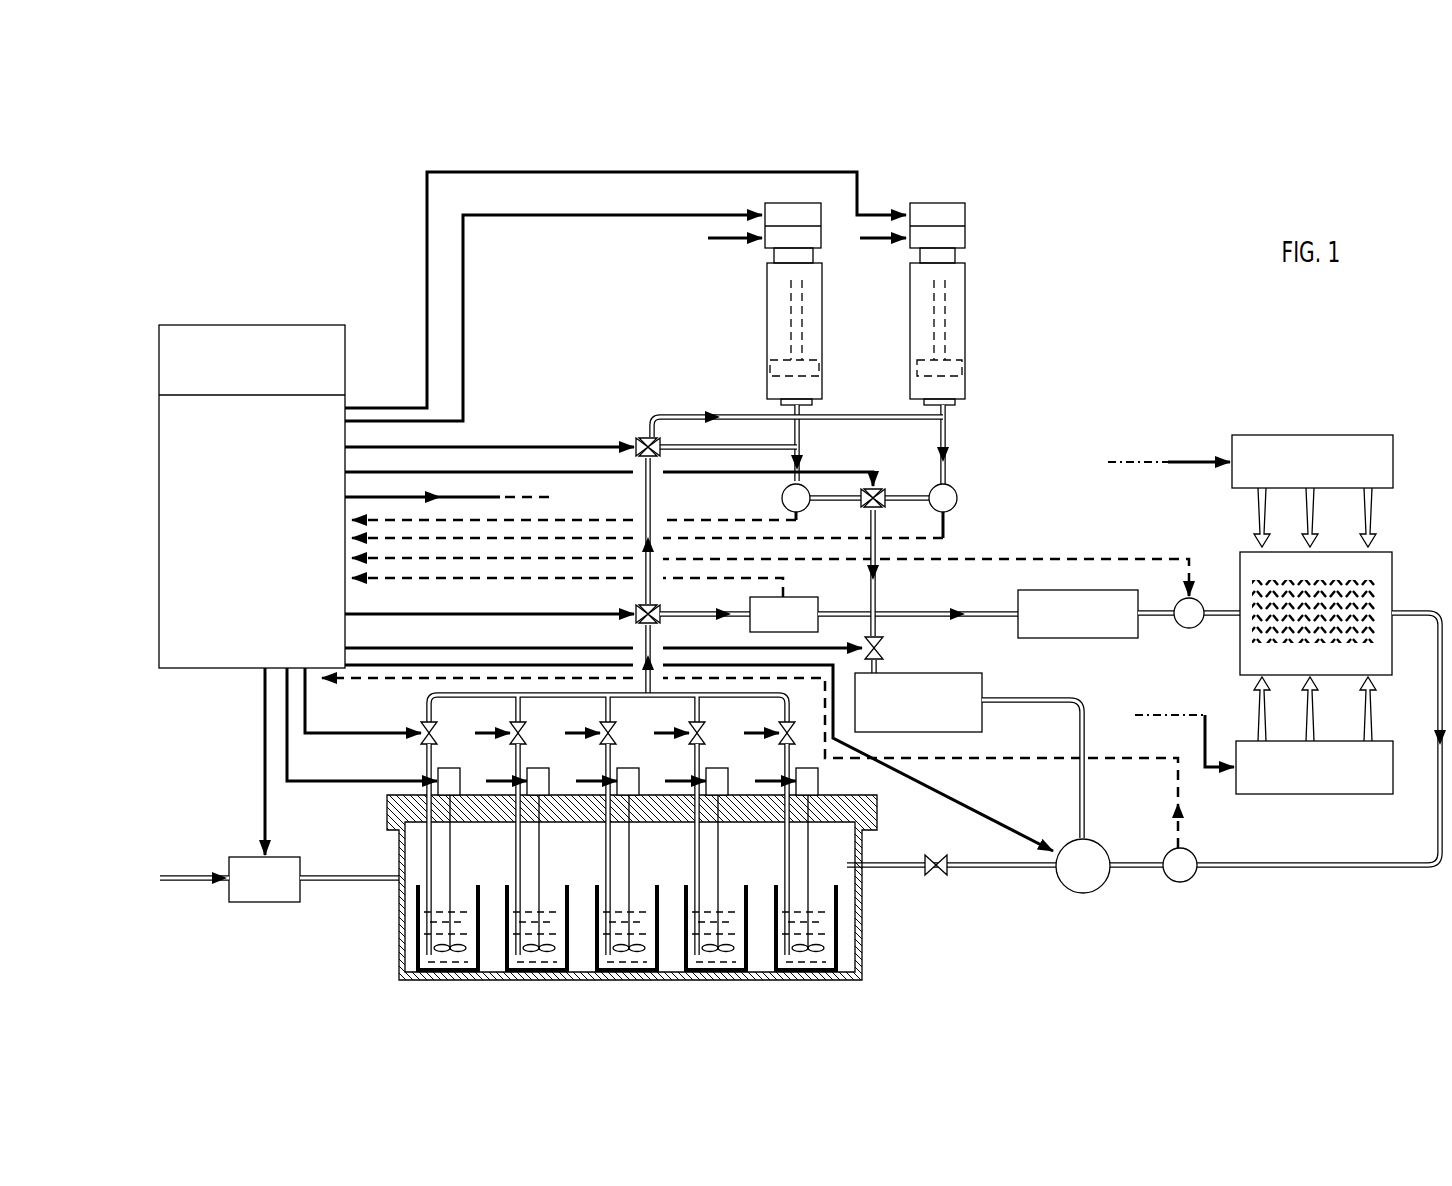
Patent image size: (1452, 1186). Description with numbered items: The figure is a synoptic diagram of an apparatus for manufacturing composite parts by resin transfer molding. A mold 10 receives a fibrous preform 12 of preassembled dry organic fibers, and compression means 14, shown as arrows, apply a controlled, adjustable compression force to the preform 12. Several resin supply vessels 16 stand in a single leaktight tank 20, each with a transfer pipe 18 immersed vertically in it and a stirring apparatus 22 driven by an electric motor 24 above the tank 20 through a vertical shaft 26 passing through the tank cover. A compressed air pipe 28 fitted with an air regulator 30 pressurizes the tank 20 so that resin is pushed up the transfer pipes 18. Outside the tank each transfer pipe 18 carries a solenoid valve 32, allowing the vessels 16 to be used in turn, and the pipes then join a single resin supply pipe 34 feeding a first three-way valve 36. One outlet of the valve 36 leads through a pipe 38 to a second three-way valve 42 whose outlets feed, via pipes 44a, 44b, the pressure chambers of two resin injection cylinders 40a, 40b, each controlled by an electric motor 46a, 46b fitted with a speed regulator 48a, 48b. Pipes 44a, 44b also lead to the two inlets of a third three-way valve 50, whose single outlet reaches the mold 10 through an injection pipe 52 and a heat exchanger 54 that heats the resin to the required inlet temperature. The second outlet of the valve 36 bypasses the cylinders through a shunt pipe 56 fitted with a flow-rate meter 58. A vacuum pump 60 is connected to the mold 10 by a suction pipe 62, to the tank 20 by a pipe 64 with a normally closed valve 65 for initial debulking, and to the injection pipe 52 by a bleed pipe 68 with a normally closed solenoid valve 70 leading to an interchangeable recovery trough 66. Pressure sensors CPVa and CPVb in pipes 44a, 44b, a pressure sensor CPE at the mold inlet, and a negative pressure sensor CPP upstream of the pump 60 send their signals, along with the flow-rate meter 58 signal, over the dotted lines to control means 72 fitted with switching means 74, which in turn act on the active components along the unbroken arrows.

The mold 10 is at (1400, 577).
The fibrous preform 12 is at (1376, 634).
The compression means 14 is at (1350, 442).
The resin supply vessel 16 is at (846, 946).
The transfer pipe 18 is at (425, 858).
The tank 20 is at (866, 915).
The stirring apparatus 22 is at (450, 948).
The electric motor 24 is at (716, 782).
The vertical shaft 26 is at (628, 882).
The compressed air pipe 28 is at (207, 872).
The air regulator 30 is at (247, 896).
The solenoid valve 32 is at (600, 722).
The resin supply pipe 34 is at (645, 638).
The first three-way valve 36 is at (640, 610).
The pipe 38 is at (645, 500).
The resin injection cylinder 40a is at (778, 300).
The resin injection cylinder 40b is at (957, 310).
The second three-way valve 42 is at (645, 440).
The pipe 44a is at (705, 440).
The pipe 44b is at (850, 417).
The electric motor 46a is at (778, 238).
The electric motor 46b is at (955, 237).
The speed regulator 48a is at (775, 213).
The speed regulator 48b is at (958, 215).
The third three-way valve 50 is at (873, 488).
The injection pipe 52 is at (985, 612).
The heat exchanger 54 is at (1080, 600).
The shunt pipe 56 is at (740, 615).
The flow-rate meter 58 is at (800, 612).
The vacuum pump 60 is at (1083, 890).
The suction pipe 62 is at (1392, 870).
The pipe 64 is at (972, 868).
The valve 65 is at (942, 877).
The recovery trough 66 is at (940, 714).
The bleed pipe 68 is at (1068, 696).
The solenoid valve 70 is at (885, 648).
The control means 72 is at (185, 650).
The switching means 74 is at (207, 338).
The pressure sensor CPVa is at (790, 498).
The pressure sensor CPVb is at (960, 490).
The pressure sensor CPE is at (1187, 626).
The negative pressure sensor CPP is at (1185, 882).